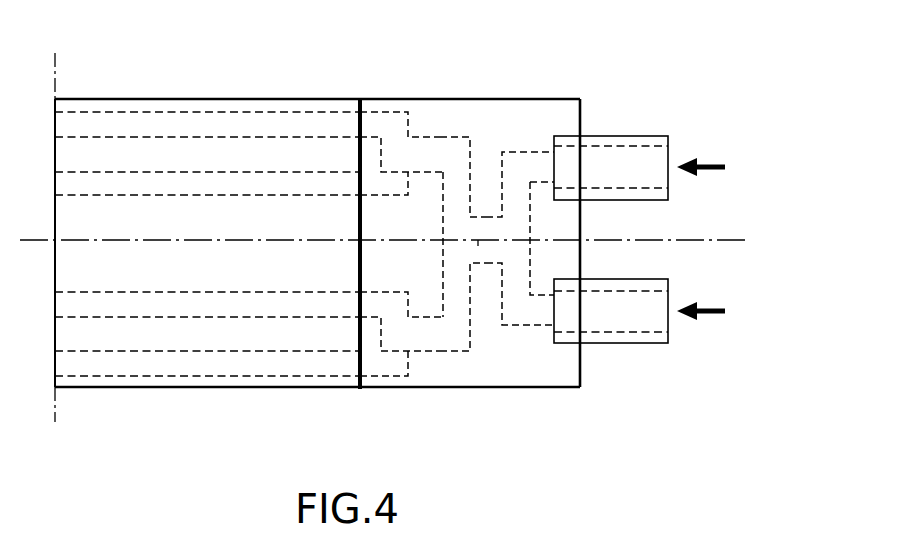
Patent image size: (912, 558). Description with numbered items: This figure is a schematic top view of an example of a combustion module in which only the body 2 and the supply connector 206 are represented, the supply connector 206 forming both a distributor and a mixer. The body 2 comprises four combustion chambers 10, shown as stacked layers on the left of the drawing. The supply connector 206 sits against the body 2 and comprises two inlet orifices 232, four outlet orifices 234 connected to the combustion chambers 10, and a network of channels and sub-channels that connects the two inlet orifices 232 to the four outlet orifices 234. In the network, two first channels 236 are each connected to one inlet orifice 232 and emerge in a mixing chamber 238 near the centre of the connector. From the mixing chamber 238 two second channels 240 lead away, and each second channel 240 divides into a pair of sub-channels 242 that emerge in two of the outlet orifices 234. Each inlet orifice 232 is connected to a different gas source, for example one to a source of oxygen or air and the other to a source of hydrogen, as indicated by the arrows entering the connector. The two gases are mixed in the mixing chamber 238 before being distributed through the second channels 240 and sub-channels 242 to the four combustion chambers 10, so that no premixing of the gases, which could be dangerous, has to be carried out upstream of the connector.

The body 2 is at (152, 78).
The combustion chambers 10 is at (203, 185).
The supply connector 206 is at (574, 80).
The inlet orifices 232 is at (558, 139).
The outlet orifices 234 is at (360, 185).
The first channels 236 is at (515, 202).
The mixing chamber 238 is at (483, 250).
The second channels 240 is at (455, 177).
The sub-channels 242 is at (378, 183).